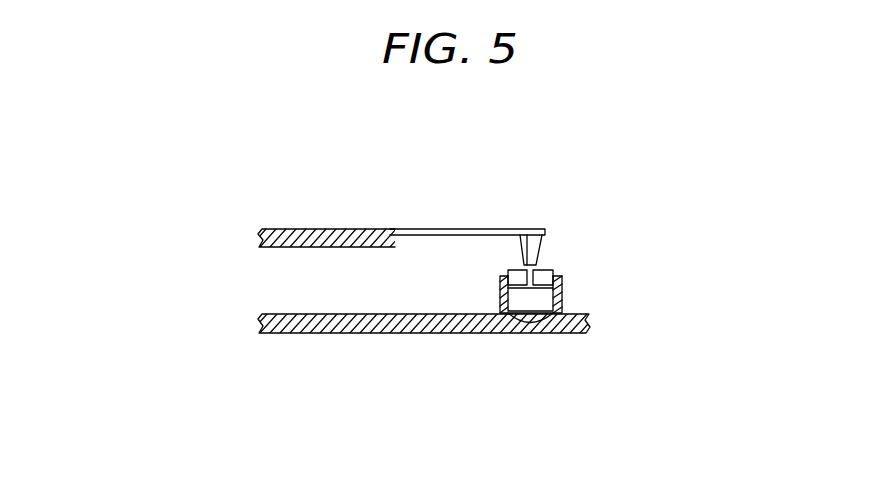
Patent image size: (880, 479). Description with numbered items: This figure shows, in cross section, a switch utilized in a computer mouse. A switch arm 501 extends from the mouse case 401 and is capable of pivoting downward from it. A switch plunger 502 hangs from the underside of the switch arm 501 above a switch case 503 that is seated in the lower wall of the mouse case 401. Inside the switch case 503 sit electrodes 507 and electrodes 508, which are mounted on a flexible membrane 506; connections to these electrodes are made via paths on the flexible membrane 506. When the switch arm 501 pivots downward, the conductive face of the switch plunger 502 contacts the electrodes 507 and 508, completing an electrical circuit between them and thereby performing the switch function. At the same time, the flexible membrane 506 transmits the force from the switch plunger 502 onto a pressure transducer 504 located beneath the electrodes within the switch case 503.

The mouse case 401 is at (278, 313).
The switch arm 501 is at (465, 229).
The switch plunger 502 is at (540, 244).
The switch case 503 is at (562, 305).
The pressure transducer 504 is at (528, 296).
The flexible membrane 506 is at (512, 315).
The electrodes 507 is at (508, 272).
The electrodes 508 is at (553, 272).